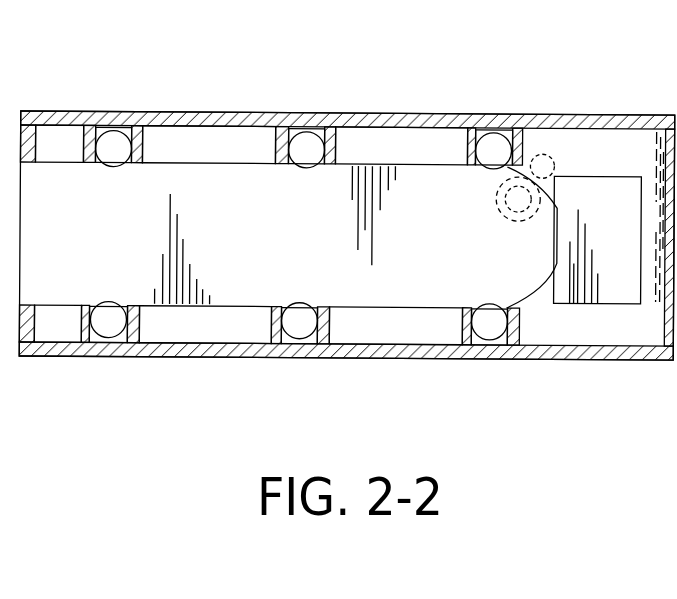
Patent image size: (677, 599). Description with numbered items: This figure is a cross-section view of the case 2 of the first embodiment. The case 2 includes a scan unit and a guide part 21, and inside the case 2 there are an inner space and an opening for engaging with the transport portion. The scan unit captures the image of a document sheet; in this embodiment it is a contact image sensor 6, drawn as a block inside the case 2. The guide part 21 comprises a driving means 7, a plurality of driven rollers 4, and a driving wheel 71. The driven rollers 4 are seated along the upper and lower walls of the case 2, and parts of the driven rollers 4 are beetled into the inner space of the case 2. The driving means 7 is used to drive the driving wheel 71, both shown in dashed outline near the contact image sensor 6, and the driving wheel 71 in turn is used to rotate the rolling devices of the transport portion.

The case 2 is at (636, 142).
The guide part 21 is at (190, 160).
The driven rollers 4 is at (312, 150).
The driving means 7 is at (543, 158).
The driving wheel 71 is at (520, 196).
The contact image sensor (CIS) 6 is at (608, 288).